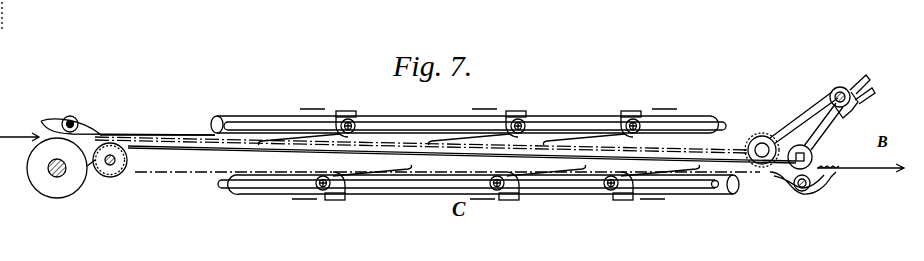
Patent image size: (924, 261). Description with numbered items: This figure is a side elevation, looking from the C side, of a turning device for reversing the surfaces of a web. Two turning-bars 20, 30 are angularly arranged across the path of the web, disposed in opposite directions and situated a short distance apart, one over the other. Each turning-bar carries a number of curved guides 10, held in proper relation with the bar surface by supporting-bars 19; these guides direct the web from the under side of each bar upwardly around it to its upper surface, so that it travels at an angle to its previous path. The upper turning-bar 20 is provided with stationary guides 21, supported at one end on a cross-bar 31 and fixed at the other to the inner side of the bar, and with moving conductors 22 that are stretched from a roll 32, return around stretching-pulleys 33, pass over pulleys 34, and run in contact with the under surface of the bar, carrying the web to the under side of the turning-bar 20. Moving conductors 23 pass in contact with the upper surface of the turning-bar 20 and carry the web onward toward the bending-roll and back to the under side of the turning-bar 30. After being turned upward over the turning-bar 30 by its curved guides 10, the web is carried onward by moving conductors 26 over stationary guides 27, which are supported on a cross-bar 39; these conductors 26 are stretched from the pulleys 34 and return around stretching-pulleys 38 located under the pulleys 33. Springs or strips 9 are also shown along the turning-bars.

The spring strip 9 is at (698, 168).
The curved guide 10 is at (344, 113).
The supporting-bar 19 is at (724, 121).
The upper turning-bar 20 is at (434, 118).
The stationary guide 21 is at (158, 136).
The moving conductor 22 is at (178, 142).
The moving conductor 23 is at (484, 155).
The moving conductor 26 is at (212, 166).
The stationary guide 27 is at (775, 176).
The lower turning-bar 30 is at (406, 189).
The cross-bar 31 is at (76, 120).
The roll 32 is at (61, 168).
The stretching-pulley 33 is at (766, 138).
The pulley 34 is at (110, 170).
The stretching-pulley 38 is at (812, 157).
The cross-bar 39 is at (809, 189).